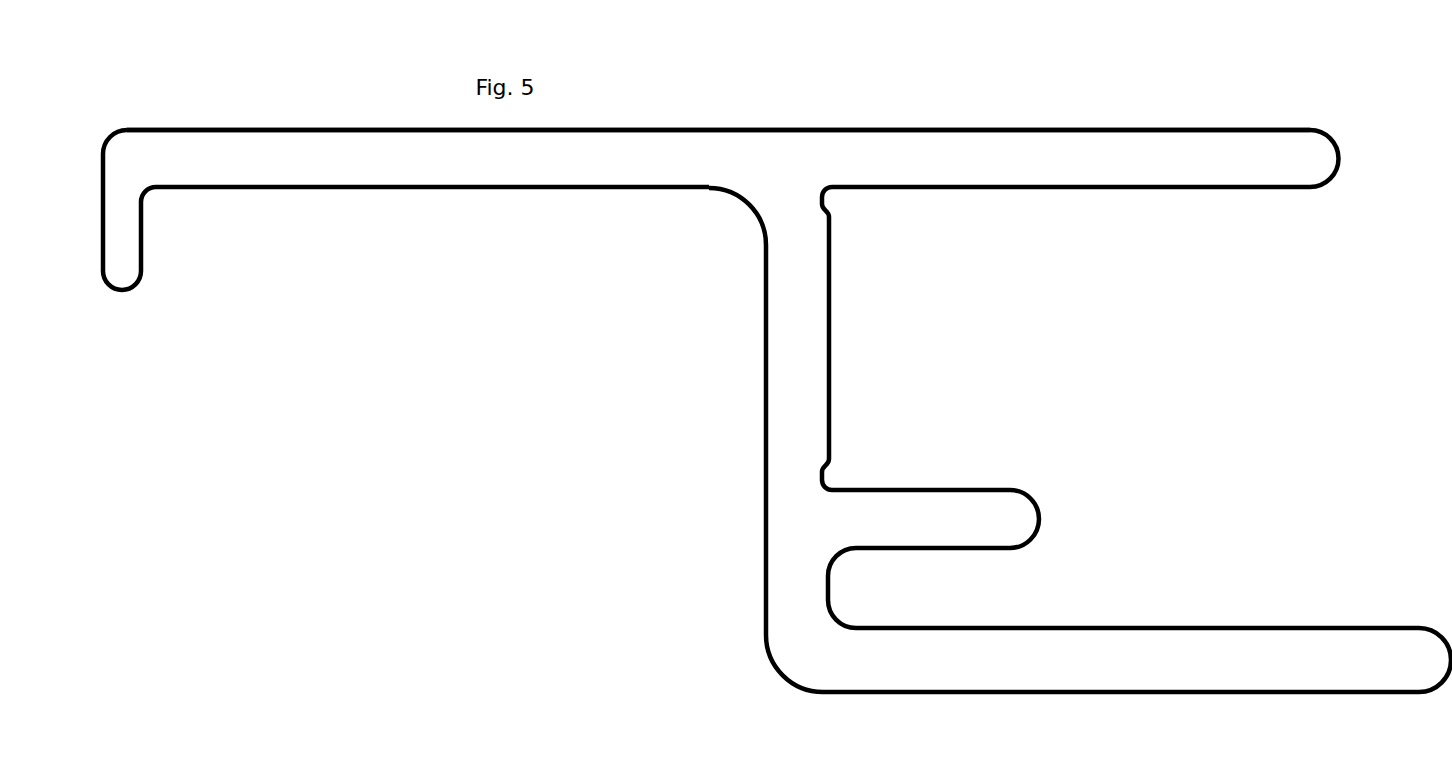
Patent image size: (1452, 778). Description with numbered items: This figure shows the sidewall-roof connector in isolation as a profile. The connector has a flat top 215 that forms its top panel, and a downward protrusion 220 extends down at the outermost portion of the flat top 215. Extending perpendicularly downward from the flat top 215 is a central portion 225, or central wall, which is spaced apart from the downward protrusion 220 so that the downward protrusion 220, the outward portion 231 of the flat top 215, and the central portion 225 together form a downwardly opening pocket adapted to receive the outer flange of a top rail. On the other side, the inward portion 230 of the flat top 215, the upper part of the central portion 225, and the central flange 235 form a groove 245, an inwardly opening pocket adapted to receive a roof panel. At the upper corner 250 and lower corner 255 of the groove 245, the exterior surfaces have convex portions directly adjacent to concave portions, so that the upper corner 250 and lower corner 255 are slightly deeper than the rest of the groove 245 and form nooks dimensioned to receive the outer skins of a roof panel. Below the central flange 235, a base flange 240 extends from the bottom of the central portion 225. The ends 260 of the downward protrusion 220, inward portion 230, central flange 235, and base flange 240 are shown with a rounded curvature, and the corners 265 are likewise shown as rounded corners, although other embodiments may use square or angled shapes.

The flat top 215 is at (693, 155).
The downward protrusion 220 is at (117, 221).
The central portion 225 is at (798, 302).
The inward portion 230 is at (1012, 153).
The outward portion 231 is at (335, 163).
The central flange 235 is at (963, 513).
The base flange 240 is at (1148, 670).
The groove 245 is at (985, 336).
The upper corner 250 is at (832, 218).
The lower corner 255 is at (832, 463).
The ends 260 is at (1318, 153).
The corners 265 is at (135, 153).